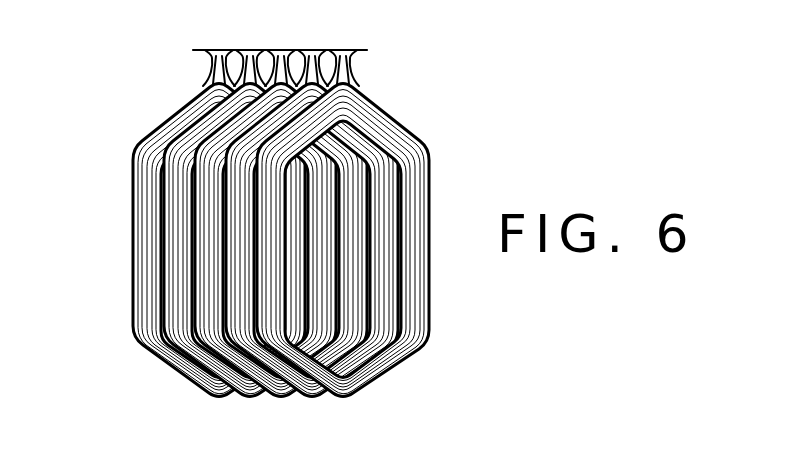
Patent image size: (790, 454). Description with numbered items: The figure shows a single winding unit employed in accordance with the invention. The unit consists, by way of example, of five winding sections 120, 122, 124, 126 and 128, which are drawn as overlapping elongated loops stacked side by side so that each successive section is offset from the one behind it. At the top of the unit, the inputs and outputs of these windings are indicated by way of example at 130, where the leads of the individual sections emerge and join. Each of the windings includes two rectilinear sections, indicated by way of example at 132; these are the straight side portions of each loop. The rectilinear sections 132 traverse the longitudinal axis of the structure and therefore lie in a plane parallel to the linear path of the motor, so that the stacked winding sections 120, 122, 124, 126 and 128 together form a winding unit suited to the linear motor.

The winding section 120 is at (140, 222).
The winding section 122 is at (166, 254).
The winding section 124 is at (200, 278).
The winding section 126 is at (232, 304).
The winding section 128 is at (300, 368).
The inputs and outputs of the windings 130 is at (324, 50).
The rectilinear sections 132 is at (229, 265).